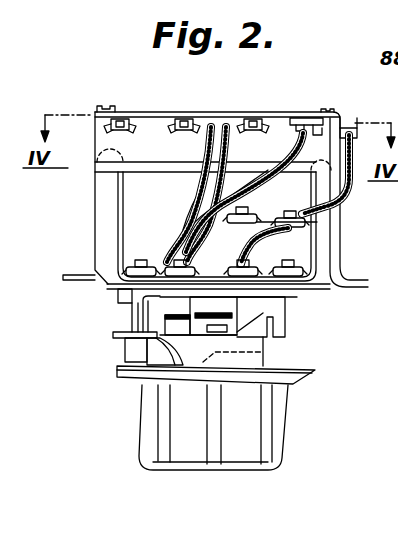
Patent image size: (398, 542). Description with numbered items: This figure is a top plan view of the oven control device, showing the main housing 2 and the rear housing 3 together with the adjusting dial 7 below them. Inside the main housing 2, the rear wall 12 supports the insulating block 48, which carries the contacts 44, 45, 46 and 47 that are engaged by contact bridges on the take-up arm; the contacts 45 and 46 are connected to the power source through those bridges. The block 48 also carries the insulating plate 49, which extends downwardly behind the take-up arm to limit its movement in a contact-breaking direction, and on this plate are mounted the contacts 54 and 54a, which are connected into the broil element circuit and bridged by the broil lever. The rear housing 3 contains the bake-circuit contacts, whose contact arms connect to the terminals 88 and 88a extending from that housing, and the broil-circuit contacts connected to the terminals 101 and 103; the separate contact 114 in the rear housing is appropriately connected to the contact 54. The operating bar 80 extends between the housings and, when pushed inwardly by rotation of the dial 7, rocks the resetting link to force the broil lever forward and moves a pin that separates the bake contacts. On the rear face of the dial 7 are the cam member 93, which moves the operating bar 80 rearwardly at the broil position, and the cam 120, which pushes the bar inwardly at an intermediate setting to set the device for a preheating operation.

The main housing 2 is at (110, 278).
The rear housing 3 is at (150, 127).
The adjusting dial 7 is at (160, 418).
The rear wall 12 is at (176, 160).
The contact 44 is at (130, 263).
The contact 45 is at (168, 257).
The contact 46 is at (240, 258).
The contact 47 is at (300, 268).
The insulating block 48 is at (137, 191).
The insulating plate 49 is at (300, 239).
The contact 54 is at (303, 218).
The contact 54a is at (280, 209).
The operating bar 80 is at (133, 318).
The terminal 88 is at (133, 121).
The terminal 88a is at (205, 120).
The cam member 93 is at (174, 362).
The terminal 101 is at (327, 103).
The terminal 103 is at (265, 126).
The contact 114 is at (347, 126).
The cam 120 is at (262, 352).